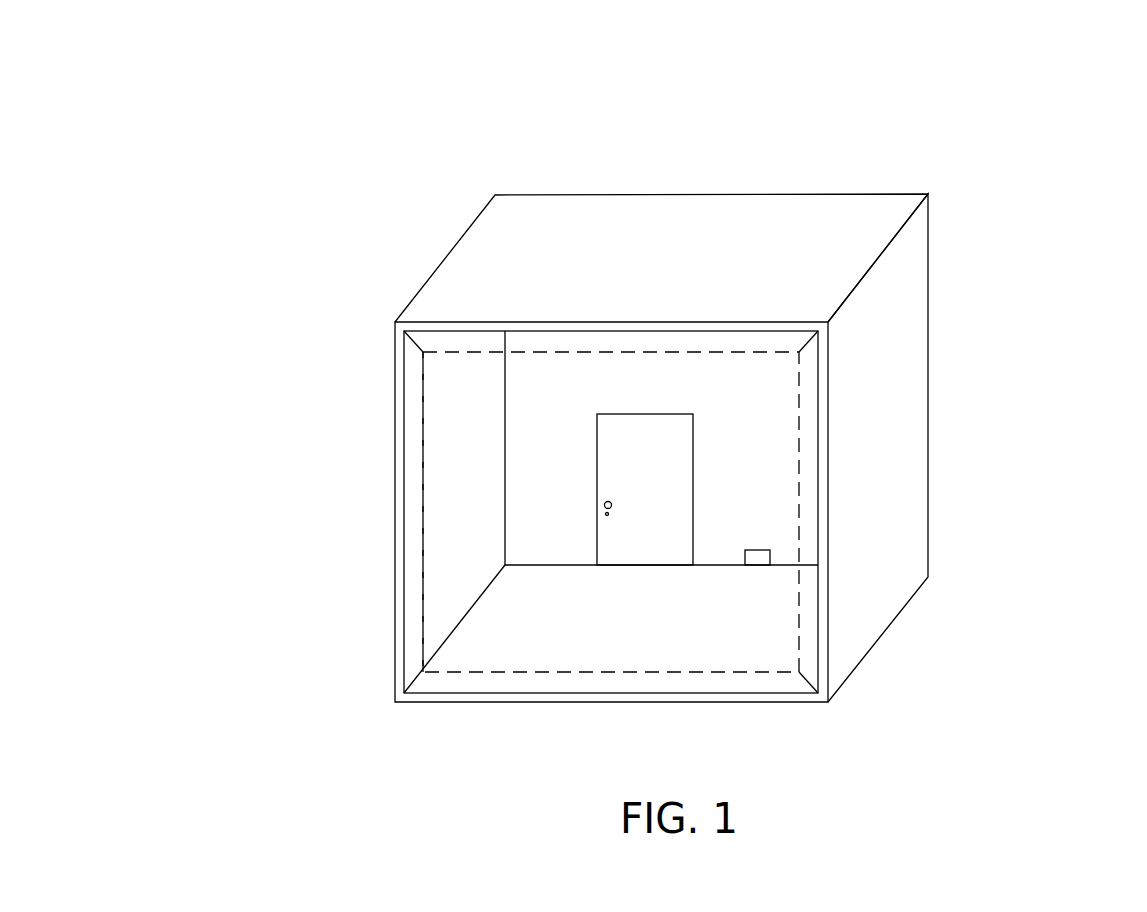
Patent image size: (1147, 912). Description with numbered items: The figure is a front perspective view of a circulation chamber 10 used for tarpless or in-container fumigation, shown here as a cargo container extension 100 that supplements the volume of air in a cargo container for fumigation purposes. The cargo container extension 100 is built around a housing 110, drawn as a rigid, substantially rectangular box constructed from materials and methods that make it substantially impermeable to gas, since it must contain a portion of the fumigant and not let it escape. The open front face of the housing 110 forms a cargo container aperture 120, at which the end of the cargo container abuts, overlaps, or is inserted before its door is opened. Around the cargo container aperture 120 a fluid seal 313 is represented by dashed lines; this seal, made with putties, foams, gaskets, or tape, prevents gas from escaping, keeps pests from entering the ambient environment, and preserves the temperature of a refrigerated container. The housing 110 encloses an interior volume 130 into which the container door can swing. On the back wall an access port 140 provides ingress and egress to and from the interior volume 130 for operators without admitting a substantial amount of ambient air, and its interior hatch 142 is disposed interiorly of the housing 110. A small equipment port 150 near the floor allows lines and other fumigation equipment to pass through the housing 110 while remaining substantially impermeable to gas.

The circulation chamber 10 is at (443, 176).
The cargo container extension 100 is at (777, 158).
The housing 110 is at (929, 244).
The cargo container aperture 120 is at (402, 364).
The fluid seal 313 is at (424, 418).
The interior volume 130 is at (421, 482).
The access port 140 is at (624, 467).
The interior hatch 142 is at (595, 537).
The equipment port 150 is at (758, 550).